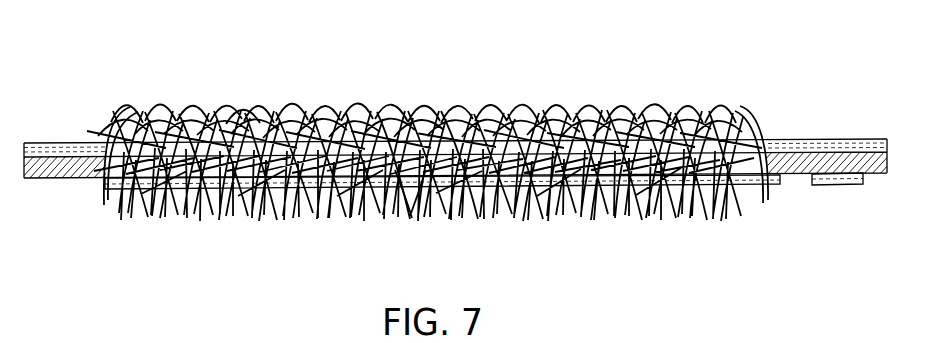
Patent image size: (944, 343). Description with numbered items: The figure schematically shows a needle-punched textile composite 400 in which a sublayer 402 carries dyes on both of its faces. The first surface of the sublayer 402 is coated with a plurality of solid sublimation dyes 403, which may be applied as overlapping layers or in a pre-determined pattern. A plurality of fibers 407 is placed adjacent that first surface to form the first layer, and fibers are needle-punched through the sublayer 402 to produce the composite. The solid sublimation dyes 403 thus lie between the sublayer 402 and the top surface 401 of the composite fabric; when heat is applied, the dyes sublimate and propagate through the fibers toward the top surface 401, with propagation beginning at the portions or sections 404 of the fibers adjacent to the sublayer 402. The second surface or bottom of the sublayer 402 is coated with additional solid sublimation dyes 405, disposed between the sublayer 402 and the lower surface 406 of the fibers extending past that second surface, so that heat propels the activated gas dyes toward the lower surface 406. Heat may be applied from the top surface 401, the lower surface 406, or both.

The needle-punched textile composite 400 is at (802, 33).
The top surface 401 is at (406, 106).
The sublayer 402 is at (48, 180).
The solid sublimation dyes 403 is at (60, 143).
The portions or sections of the fibers 404 is at (109, 114).
The additional solid sublimation dyes 405 is at (227, 214).
The lower surface 406 is at (408, 218).
The plurality of fibers 407 is at (243, 106).